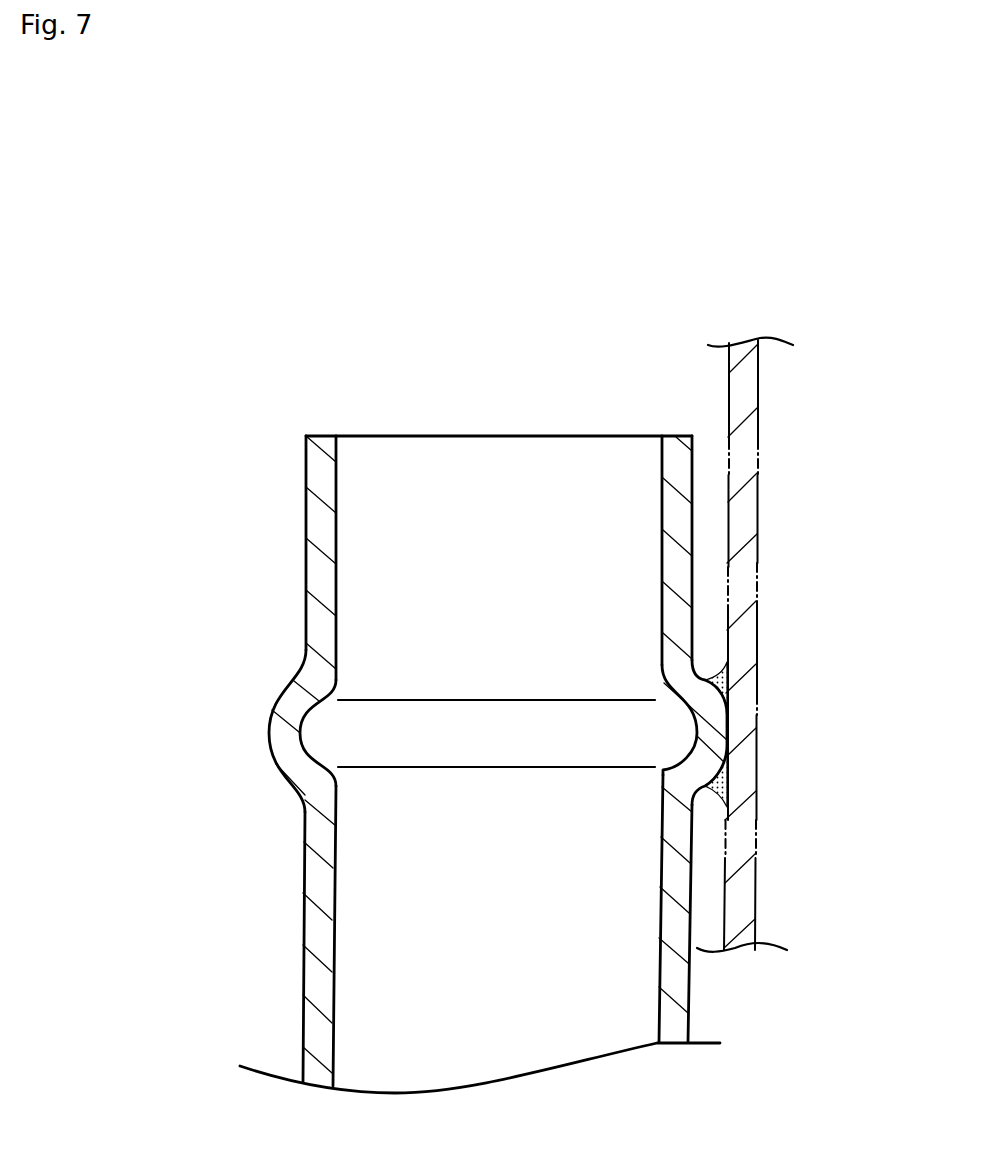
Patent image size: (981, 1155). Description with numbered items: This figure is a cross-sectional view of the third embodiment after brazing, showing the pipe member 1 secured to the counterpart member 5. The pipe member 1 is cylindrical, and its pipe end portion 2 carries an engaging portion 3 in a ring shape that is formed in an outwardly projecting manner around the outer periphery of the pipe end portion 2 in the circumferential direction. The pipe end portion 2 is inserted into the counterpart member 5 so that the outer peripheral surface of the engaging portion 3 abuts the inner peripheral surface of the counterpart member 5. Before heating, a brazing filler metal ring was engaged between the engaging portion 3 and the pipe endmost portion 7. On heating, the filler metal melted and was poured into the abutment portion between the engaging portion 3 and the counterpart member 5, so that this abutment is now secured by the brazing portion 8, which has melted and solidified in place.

The pipe member 1 is at (302, 945).
The pipe end portion 2 is at (304, 626).
The engaging portion 3 is at (268, 731).
The counterpart member 5 is at (758, 523).
The pipe endmost portion 7 is at (323, 434).
The brazing portion 8 is at (714, 678).